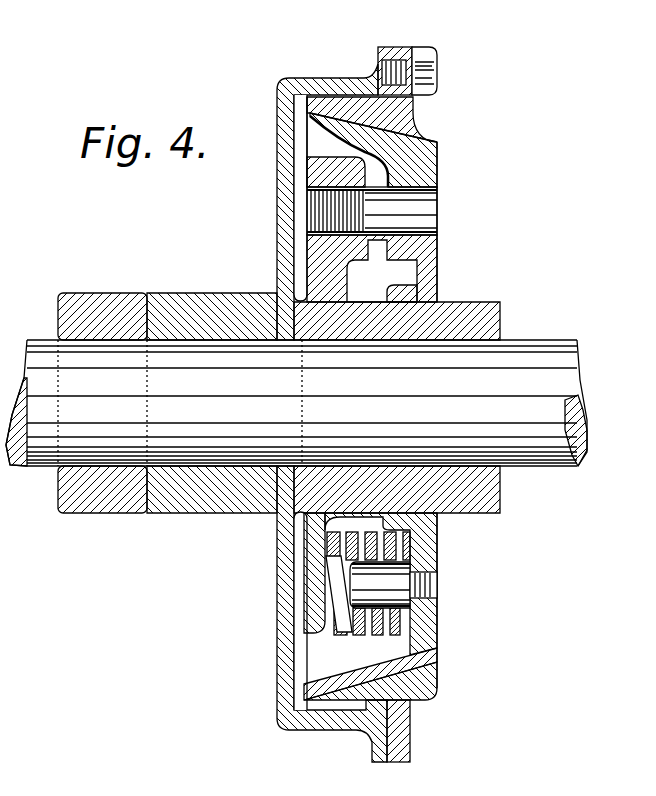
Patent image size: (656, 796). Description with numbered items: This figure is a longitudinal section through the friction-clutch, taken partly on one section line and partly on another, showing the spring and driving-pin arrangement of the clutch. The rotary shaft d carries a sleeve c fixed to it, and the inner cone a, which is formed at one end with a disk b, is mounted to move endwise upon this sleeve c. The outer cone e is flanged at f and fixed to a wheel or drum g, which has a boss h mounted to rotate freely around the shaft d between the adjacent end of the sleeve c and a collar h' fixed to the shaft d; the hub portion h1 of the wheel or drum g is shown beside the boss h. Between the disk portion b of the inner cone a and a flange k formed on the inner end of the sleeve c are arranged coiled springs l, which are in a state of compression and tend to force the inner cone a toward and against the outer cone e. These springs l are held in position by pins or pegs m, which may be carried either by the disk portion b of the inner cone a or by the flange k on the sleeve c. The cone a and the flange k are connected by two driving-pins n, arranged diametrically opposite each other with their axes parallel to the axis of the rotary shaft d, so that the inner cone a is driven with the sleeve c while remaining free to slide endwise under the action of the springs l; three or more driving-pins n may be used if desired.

The inner cone a is at (359, 674).
The disk b is at (442, 606).
The sleeve c is at (508, 491).
The rotary shaft d is at (296, 403).
The outer cone e is at (370, 400).
The flange f is at (418, 735).
The wheel or drum g is at (284, 560).
The boss h is at (212, 306).
The hub section h1 is at (119, 265).
The collar h' is at (212, 504).
The flange k is at (312, 597).
The coiled springs l is at (338, 635).
The pins or pegs m is at (393, 585).
The driving-pins n is at (372, 211).